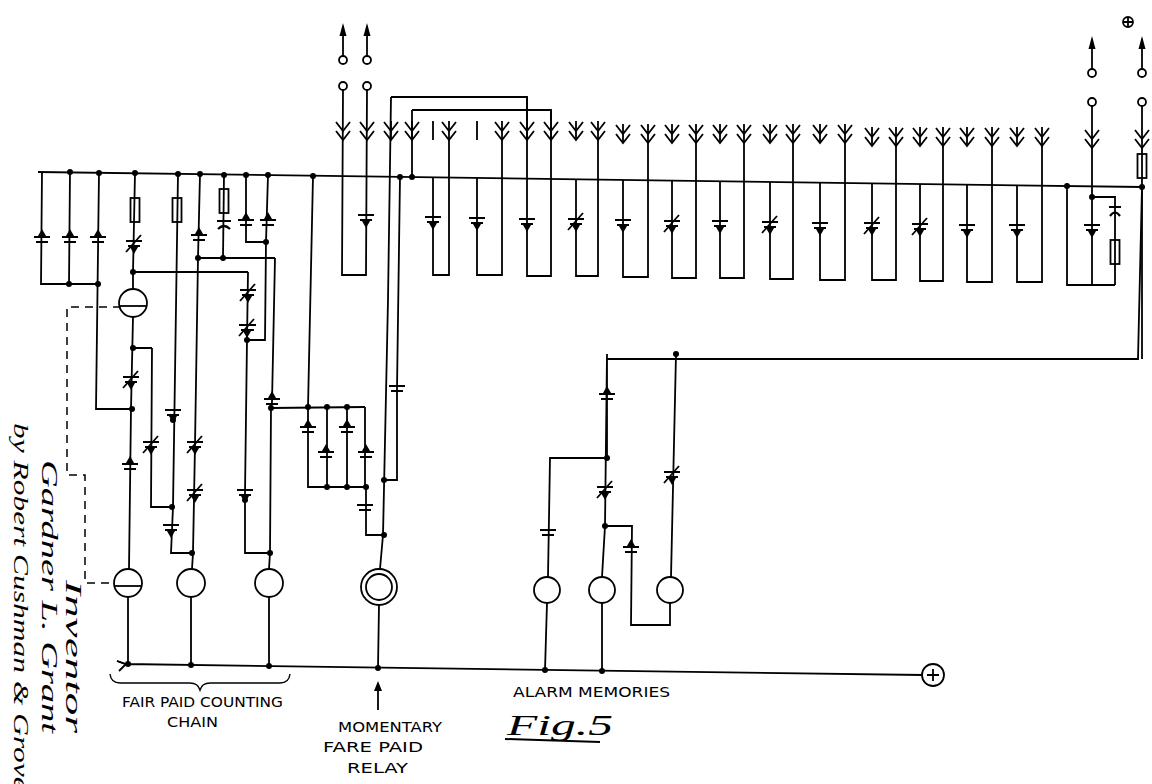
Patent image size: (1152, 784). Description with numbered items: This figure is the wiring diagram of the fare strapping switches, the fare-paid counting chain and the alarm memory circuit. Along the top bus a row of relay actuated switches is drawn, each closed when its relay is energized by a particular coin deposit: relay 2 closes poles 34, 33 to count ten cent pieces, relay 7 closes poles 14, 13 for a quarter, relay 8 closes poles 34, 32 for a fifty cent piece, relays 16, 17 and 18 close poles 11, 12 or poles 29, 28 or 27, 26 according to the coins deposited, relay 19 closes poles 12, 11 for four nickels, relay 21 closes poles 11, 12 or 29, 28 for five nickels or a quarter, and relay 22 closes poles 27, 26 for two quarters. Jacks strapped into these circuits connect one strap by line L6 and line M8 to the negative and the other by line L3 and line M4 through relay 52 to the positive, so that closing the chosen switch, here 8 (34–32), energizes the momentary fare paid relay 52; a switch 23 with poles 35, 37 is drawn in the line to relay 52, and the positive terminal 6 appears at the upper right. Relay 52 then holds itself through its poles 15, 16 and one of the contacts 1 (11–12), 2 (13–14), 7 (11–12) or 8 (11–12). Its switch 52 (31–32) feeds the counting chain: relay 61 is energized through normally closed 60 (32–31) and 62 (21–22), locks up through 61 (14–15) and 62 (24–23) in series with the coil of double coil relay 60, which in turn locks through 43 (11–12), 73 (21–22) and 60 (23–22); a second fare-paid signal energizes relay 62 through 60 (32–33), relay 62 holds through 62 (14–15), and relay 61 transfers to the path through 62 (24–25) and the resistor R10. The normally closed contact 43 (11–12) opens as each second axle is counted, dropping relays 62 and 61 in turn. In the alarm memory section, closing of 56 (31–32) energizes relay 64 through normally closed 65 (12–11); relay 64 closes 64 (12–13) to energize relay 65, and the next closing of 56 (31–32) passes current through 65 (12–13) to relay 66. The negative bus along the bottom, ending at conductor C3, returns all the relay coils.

The relay 1 is at (303, 428).
The relay 2 is at (376, 338).
The relay 7 is at (408, 326).
The relay 8 is at (442, 339).
The relay 16 is at (495, 370).
The relay 17 is at (688, 224).
The relay 18 is at (787, 226).
The relay 19 is at (864, 226).
The relay 21 is at (551, 355).
The relay 22 is at (575, 358).
The switch pole 23 is at (274, 334).
The switch pole 24 is at (170, 440).
The switch pole 25 is at (180, 403).
The switch pole 26 is at (925, 237).
The switch pole 27 is at (924, 216).
The switch pole 28 is at (801, 236).
The switch pole 29 is at (800, 214).
The switch pole 31 is at (361, 343).
The switch pole 32 is at (361, 334).
The switch pole 33 is at (359, 321).
The switch pole 34 is at (485, 210).
The contact terminal 35 is at (405, 379).
The contact terminal 37 is at (406, 398).
The switch pole 11 is at (589, 355).
The switch pole 12 is at (590, 378).
The switch pole 13 is at (422, 395).
The switch pole 14 is at (329, 365).
The switch pole 15 is at (275, 521).
The relay 43 is at (239, 293).
The relay 73 is at (239, 328).
The relay 52 is at (215, 416).
The relay 56 is at (596, 395).
The double coil relay 60 is at (195, 397).
The relay 61 is at (175, 559).
The relay 62 is at (206, 495).
The relay 64 is at (614, 571).
The relay 65 is at (602, 542).
The relay 66 is at (547, 590).
The positive supply terminal 6 is at (1133, 23).
The resistor R10 is at (174, 200).
The line M4 is at (381, 141).
The line M8 is at (407, 141).
The line L3 is at (517, 145).
The line L6 is at (542, 145).
The conductor C3 is at (108, 651).